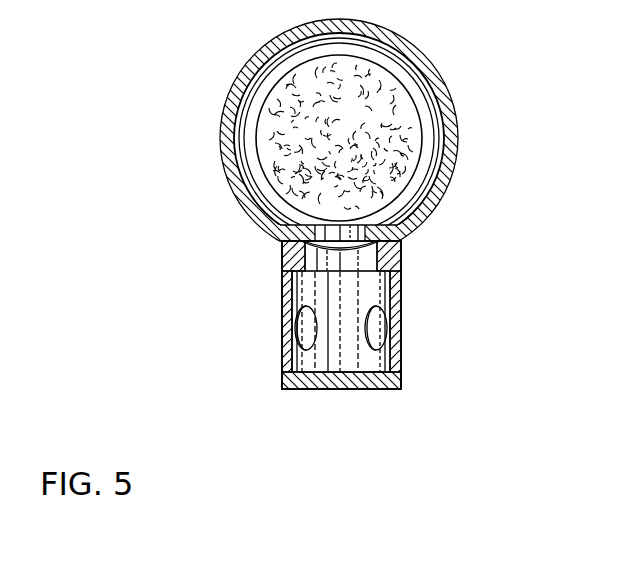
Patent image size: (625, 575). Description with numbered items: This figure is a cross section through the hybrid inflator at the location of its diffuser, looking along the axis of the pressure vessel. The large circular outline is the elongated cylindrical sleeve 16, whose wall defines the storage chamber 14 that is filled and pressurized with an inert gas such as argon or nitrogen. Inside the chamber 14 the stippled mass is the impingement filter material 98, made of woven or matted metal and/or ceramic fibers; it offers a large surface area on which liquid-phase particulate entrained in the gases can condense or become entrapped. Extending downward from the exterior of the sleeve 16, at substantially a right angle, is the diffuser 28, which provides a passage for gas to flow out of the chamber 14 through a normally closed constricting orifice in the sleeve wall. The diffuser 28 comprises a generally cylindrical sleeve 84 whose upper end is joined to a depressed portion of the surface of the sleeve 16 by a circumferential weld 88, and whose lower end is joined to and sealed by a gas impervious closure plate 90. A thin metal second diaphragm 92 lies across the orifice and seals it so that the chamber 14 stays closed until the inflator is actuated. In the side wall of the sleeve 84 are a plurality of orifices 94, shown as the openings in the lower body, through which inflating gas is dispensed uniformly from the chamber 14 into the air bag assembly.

The storage chamber 14 is at (404, 70).
The cylindrical sleeve 16 is at (233, 96).
The impingement filter material 98 is at (406, 108).
The circumferential weld 88 is at (282, 245).
The second diaphragm 92 is at (288, 265).
The diffuser 28 is at (268, 315).
The cylindrical sleeve of diffuser 84 is at (283, 362).
The closure plate 90 is at (367, 390).
The orifices 94 is at (380, 326).